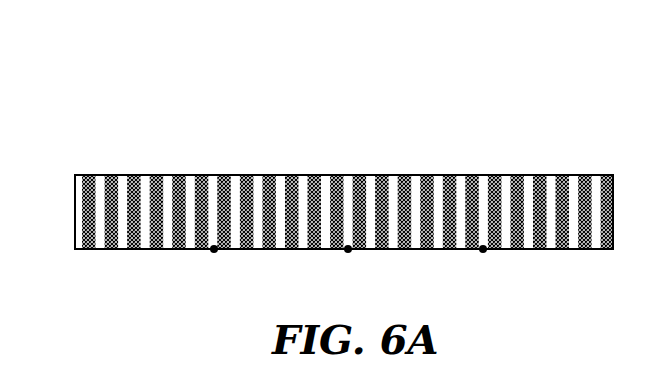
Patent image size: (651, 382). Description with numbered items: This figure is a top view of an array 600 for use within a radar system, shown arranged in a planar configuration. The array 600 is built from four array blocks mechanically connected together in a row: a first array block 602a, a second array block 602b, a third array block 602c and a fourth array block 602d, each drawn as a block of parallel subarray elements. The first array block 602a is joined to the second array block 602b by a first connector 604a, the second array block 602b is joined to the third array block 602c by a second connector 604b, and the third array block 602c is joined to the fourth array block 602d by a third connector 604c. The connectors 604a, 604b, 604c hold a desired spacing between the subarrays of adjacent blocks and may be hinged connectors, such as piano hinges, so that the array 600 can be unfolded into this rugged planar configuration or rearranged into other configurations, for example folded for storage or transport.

The array 600 is at (563, 78).
The first array block 602a is at (141, 175).
The second array block 602b is at (272, 175).
The third array block 602c is at (404, 175).
The fourth array block 602d is at (536, 175).
The first connector 604a is at (215, 254).
The second connector 604b is at (348, 254).
The third connector 604c is at (483, 254).